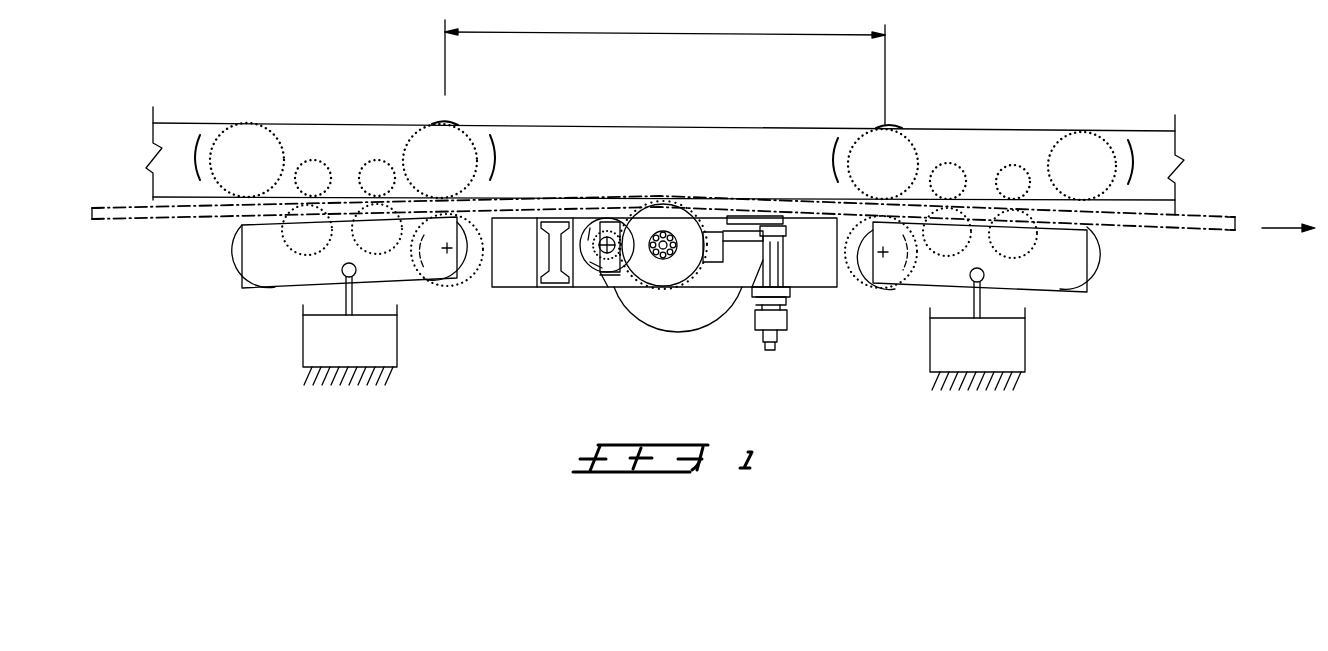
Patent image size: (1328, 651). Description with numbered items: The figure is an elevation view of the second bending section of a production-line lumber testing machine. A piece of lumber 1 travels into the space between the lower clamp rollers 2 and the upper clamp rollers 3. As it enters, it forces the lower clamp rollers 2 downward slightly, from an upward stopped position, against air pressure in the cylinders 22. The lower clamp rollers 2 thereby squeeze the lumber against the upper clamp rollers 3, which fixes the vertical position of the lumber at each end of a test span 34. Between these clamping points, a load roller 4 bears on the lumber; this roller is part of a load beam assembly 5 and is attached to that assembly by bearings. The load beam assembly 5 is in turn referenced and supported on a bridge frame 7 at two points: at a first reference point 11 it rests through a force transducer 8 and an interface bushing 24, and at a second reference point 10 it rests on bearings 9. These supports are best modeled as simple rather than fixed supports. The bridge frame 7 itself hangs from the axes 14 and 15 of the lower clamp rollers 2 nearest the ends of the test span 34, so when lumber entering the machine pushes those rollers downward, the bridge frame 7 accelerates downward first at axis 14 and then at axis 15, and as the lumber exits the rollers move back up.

The piece of lumber 1 is at (1190, 236).
The lower clamp rollers 2 is at (318, 258).
The upper clamp rollers 3 is at (278, 140).
The load roller 4 is at (696, 210).
The load beam assembly 5 is at (652, 310).
The bridge frame 7 is at (590, 292).
The force transducer 8 is at (790, 304).
The bearings 9 is at (582, 215).
The second reference point 10 is at (619, 226).
The first reference point 11 is at (788, 244).
The axis of lower clamp roller 14 is at (446, 255).
The axis of lower clamp roller 15 is at (880, 258).
The cylinders 22 is at (400, 360).
The interface bushing 24 is at (788, 270).
The test span 34 is at (645, 32).